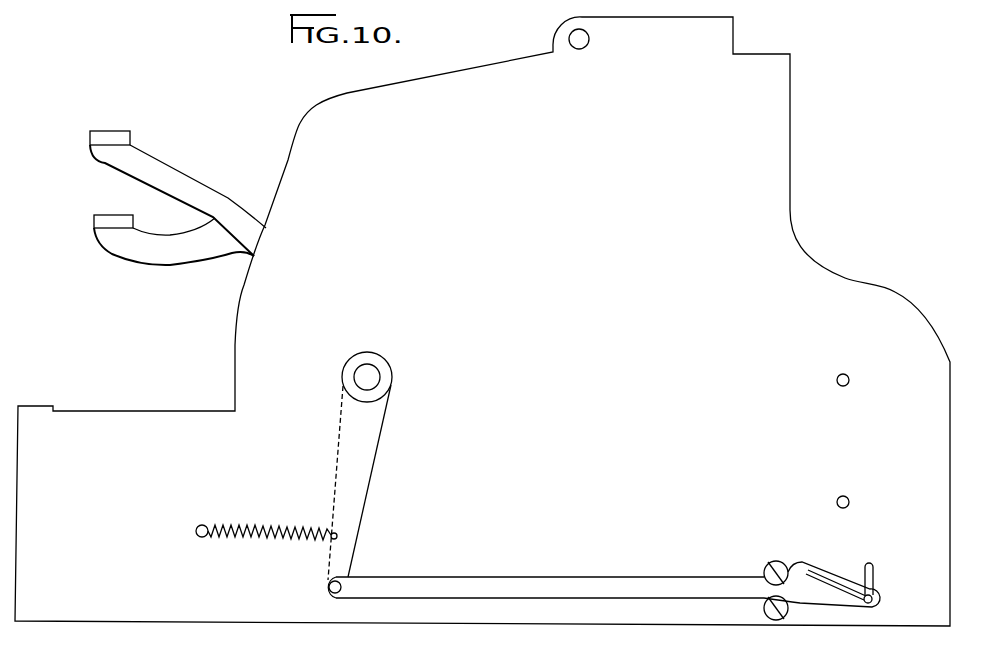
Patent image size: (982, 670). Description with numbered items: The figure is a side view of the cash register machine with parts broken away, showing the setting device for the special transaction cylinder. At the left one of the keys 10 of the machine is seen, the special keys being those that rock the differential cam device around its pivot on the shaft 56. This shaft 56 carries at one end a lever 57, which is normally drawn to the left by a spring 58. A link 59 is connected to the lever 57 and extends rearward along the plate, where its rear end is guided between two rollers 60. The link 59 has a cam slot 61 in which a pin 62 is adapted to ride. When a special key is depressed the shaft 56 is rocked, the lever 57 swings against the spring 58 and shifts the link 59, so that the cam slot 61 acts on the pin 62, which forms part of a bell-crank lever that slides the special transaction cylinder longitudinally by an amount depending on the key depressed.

The keys 10 is at (128, 215).
The shaft 56 is at (373, 377).
The lever 57 is at (369, 494).
The spring 58 is at (266, 543).
The link 59 is at (546, 580).
The rollers 60 is at (778, 562).
The cam slot 61 is at (846, 569).
The pin 62 is at (874, 600).